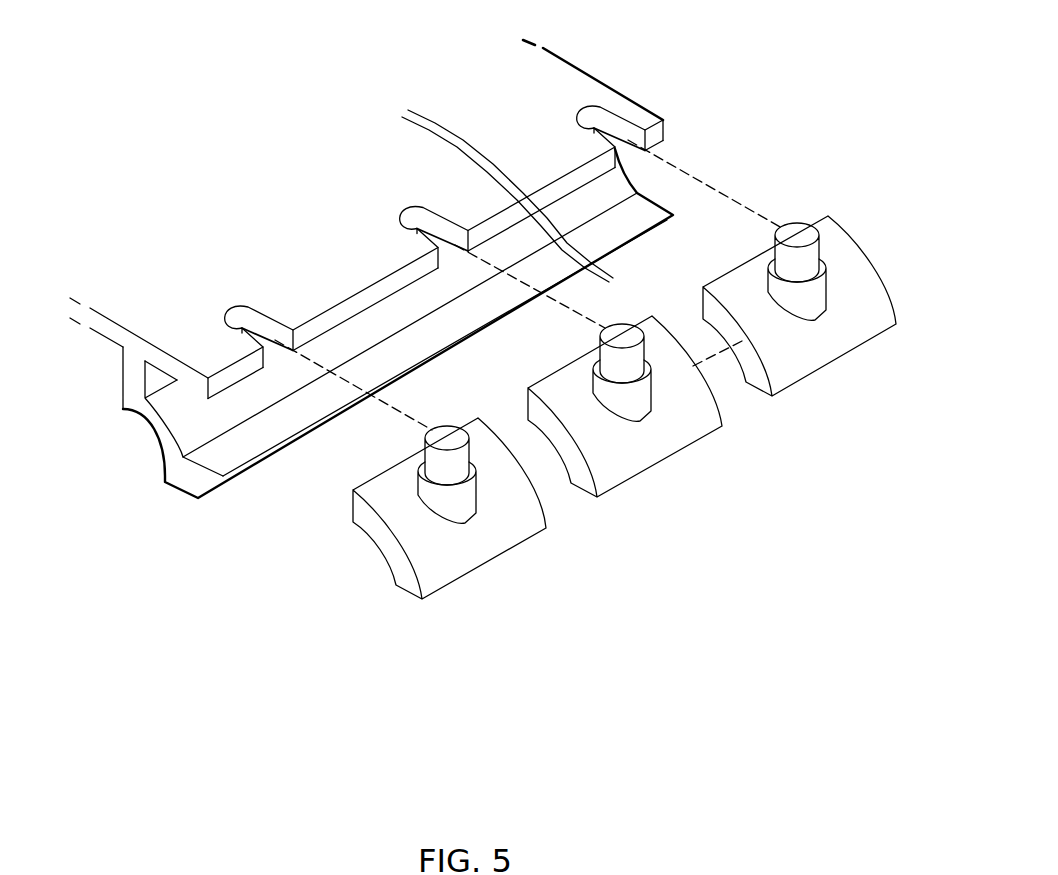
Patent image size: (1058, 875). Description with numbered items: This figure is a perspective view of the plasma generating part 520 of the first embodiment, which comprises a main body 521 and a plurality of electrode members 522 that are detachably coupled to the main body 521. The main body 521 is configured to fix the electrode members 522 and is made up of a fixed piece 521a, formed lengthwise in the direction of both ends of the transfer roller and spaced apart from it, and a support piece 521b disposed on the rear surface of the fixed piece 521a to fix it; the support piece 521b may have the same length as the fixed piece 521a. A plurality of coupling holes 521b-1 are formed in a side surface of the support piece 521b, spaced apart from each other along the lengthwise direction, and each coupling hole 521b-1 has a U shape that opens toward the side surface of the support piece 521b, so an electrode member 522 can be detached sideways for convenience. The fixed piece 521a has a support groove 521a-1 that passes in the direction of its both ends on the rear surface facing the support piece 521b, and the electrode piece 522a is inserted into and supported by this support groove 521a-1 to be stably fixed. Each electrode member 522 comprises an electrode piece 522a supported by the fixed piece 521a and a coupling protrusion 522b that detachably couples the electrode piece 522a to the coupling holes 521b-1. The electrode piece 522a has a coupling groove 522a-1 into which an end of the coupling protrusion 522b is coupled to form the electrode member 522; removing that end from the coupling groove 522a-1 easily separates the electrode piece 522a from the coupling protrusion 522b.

The plasma generating part 520 is at (473, 396).
The main body 521 is at (361, 374).
The fixed piece 521a is at (361, 407).
The support groove 521a-1 is at (178, 420).
The support piece 521b is at (366, 353).
The coupling hole 521b-1 is at (255, 318).
The electrode member 522 is at (624, 462).
The electrode piece 522a is at (624, 441).
The coupling groove 522a-1 is at (623, 380).
The coupling protrusion 522b is at (445, 490).